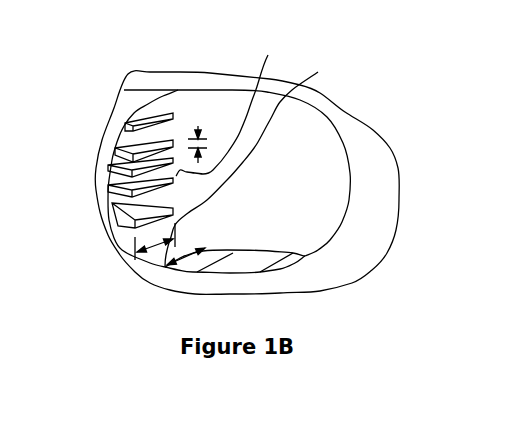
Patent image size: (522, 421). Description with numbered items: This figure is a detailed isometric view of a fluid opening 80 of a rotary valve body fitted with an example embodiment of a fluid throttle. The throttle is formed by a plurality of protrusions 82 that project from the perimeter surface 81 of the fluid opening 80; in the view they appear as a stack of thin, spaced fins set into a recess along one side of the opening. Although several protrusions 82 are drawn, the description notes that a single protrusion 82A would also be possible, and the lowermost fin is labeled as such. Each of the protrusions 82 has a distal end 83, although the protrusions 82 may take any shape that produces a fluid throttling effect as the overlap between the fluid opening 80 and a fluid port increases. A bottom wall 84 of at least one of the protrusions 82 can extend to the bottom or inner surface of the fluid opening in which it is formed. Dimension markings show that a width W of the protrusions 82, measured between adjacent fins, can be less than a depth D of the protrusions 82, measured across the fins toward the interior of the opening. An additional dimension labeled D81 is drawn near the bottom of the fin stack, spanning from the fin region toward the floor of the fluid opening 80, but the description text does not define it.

The fluid opening 80 is at (232, 90).
The perimeter surface 81 is at (152, 109).
The protrusions 82 is at (128, 148).
The single protrusion 82A is at (130, 231).
The distal end 83 is at (256, 161).
The bottom wall 84 is at (230, 103).
The width W is at (198, 126).
The depth D is at (135, 253).
The pocket depth dimension D81 is at (166, 266).